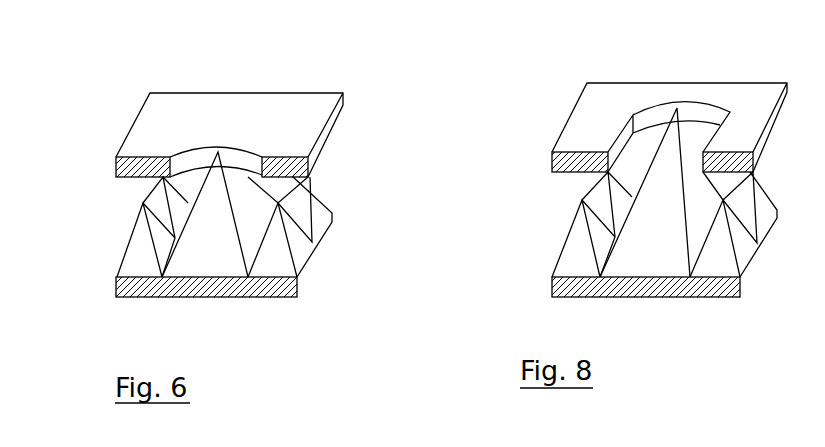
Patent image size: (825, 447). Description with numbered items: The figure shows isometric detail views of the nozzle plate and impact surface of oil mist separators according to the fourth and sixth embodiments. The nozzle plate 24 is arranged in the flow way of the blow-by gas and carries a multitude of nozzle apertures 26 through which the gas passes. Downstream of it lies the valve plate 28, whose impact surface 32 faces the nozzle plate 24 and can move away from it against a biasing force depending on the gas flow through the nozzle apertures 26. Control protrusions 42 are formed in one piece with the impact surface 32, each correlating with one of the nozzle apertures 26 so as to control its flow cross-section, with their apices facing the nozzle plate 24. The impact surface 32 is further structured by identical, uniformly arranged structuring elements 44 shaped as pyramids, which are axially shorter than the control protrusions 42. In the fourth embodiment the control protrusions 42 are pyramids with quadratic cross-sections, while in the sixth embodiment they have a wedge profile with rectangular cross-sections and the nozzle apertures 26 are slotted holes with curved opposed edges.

In FIG. 6, the nozzle plate 24 is at (143, 120).
In FIG. 8, the nozzle plate 24 is at (585, 122).
In FIG. 6, the nozzle apertures 26 is at (185, 157).
In FIG. 8, the nozzle apertures 26 is at (647, 122).
In FIG. 6, the valve plate 28 is at (116, 290).
In FIG. 8, the valve plate 28 is at (552, 290).
In FIG. 6, the impact surface 32 is at (117, 277).
In FIG. 8, the impact surface 32 is at (552, 277).
In FIG. 6, the control protrusions 42 is at (215, 203).
In FIG. 8, the control protrusions 42 is at (657, 207).
In FIG. 6, the structuring elements 44 is at (137, 237).
In FIG. 8, the structuring elements 44 is at (578, 237).